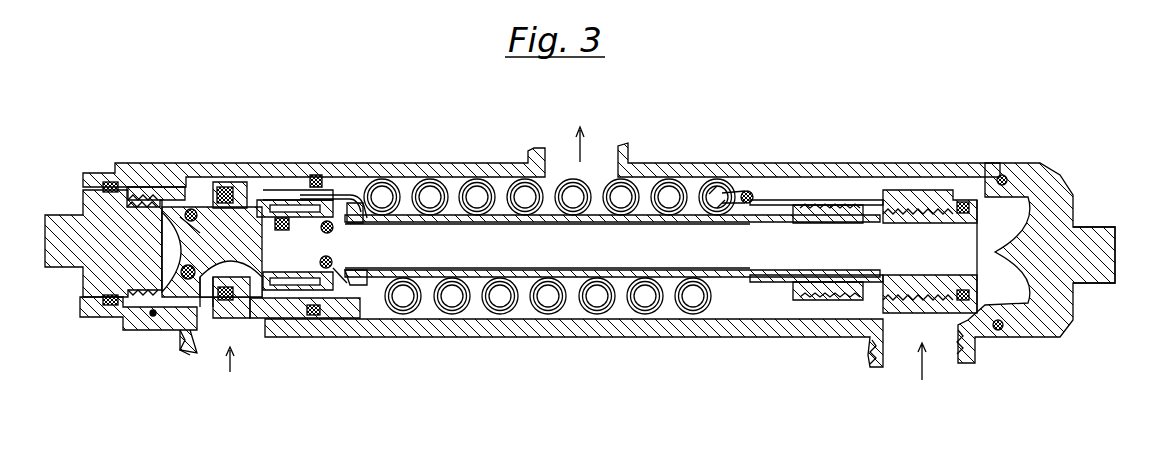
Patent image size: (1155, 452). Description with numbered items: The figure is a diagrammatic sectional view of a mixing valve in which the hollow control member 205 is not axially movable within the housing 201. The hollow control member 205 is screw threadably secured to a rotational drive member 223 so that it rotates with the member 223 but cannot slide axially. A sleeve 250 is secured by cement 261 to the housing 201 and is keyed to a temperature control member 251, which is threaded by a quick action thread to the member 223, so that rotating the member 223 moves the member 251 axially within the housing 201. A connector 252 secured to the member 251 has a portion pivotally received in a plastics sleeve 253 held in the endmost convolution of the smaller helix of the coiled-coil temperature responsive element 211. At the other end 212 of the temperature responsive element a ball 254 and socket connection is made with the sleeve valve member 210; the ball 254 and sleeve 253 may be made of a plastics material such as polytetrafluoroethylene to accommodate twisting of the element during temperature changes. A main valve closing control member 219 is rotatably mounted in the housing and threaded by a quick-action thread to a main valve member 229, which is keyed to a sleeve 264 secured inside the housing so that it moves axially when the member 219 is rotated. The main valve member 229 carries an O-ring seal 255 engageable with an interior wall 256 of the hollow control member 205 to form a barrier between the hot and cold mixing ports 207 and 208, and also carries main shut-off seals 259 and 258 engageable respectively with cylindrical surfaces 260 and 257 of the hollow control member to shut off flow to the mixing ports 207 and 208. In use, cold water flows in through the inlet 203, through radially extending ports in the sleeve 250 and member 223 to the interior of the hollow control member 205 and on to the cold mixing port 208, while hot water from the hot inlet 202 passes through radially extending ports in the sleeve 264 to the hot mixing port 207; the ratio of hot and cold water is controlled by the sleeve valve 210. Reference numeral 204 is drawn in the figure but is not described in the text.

The housing 201 is at (382, 165).
The hot inlet 202 is at (200, 355).
The cold inlet 203 is at (883, 352).
The housing section 204 is at (628, 152).
The hollow control member 205 is at (443, 272).
The hot mixing port 207 is at (222, 172).
The cold mixing port 208 is at (342, 219).
The sleeve valve member 210 is at (229, 185).
The coiled-coil temperature responsive element 211 is at (470, 185).
The other end of the temperature responsive element 212 is at (335, 190).
The main valve closing control member 219 is at (100, 273).
The rotational drive member 223 is at (1077, 218).
The main valve member 229 is at (160, 193).
The sleeve 250 is at (907, 192).
The temperature control member 251 is at (784, 203).
The connector 252 is at (748, 193).
The plastics sleeve 253 is at (712, 192).
The ball 254 is at (293, 200).
The O-ring seal 255 is at (277, 290).
The interior wall 256 is at (333, 273).
The cylindrical surface 257 is at (360, 272).
The main shut-off seal 258 is at (347, 283).
The main shut-off seal 259 is at (132, 318).
The cylindrical surface 260 is at (213, 273).
The cement 261 is at (1043, 303).
The sleeve 264 is at (173, 313).